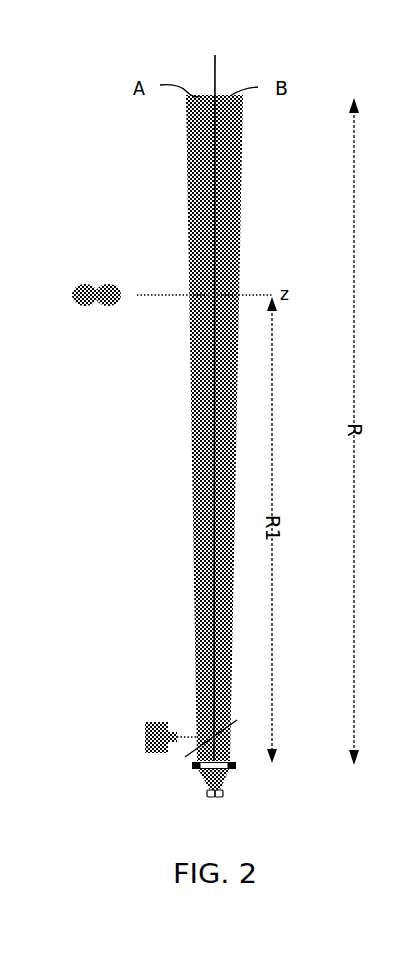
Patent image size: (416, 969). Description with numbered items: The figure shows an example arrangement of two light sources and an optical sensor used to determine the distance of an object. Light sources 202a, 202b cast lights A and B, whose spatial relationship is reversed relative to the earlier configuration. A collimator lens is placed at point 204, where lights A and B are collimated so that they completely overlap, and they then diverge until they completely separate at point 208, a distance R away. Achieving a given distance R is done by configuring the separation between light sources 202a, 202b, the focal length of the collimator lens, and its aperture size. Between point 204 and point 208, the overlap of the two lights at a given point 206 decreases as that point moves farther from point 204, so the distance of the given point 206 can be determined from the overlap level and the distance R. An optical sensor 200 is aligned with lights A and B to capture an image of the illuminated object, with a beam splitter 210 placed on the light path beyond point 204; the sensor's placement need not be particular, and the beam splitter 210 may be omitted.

The optical sensor 200 is at (152, 721).
The light source 202a is at (207, 796).
The light source 202b is at (223, 796).
The point 204 is at (233, 766).
The given point 206 is at (76, 296).
The point 208 is at (215, 391).
The beam splitter 210 is at (257, 730).